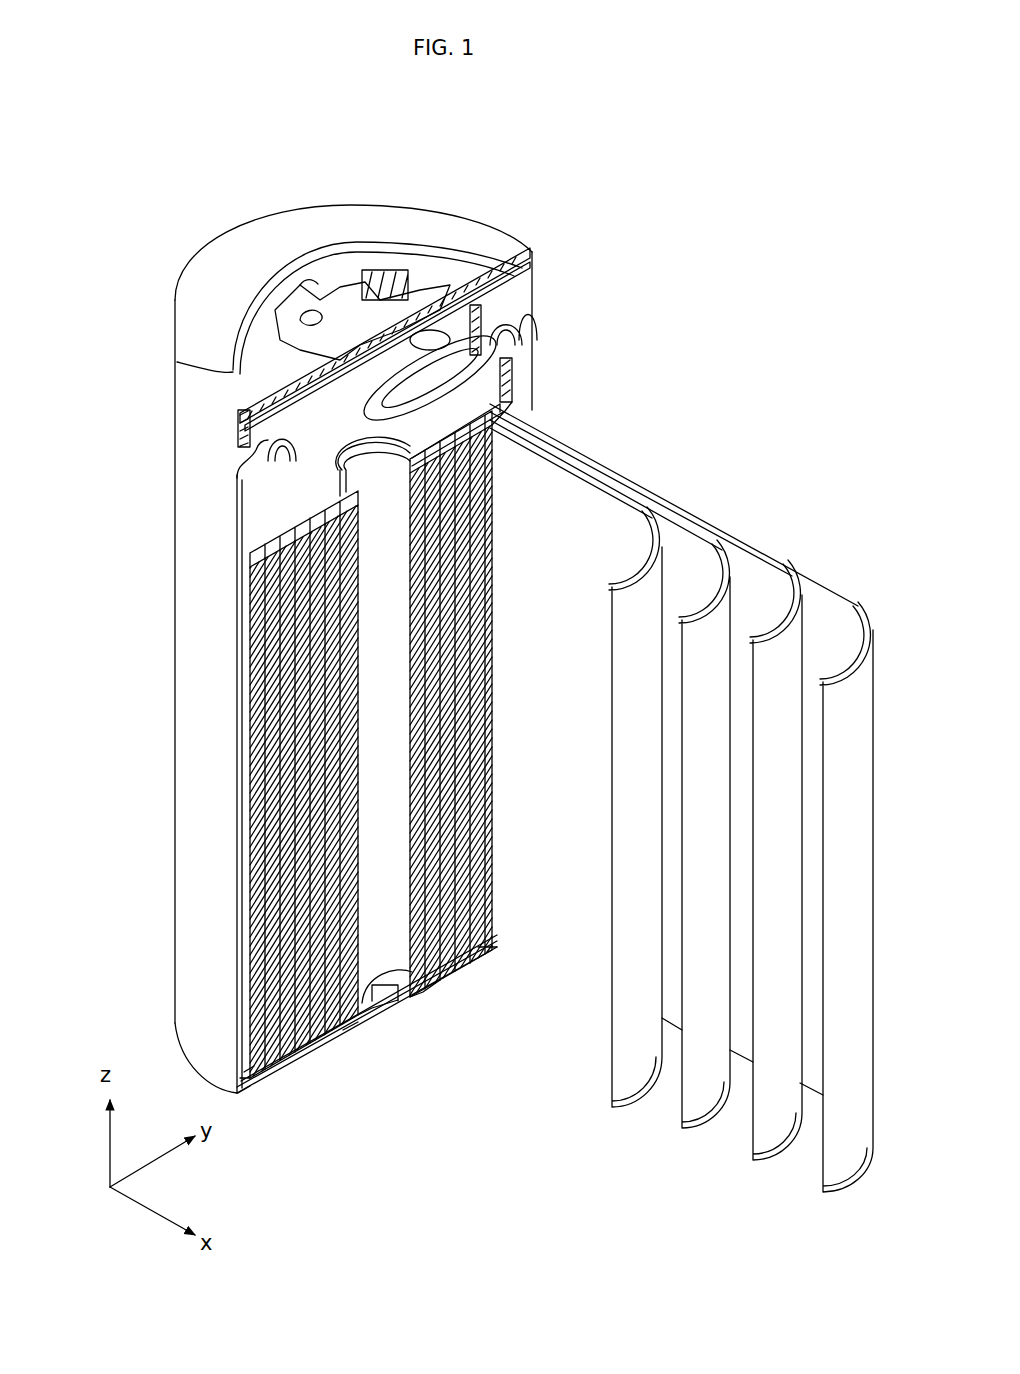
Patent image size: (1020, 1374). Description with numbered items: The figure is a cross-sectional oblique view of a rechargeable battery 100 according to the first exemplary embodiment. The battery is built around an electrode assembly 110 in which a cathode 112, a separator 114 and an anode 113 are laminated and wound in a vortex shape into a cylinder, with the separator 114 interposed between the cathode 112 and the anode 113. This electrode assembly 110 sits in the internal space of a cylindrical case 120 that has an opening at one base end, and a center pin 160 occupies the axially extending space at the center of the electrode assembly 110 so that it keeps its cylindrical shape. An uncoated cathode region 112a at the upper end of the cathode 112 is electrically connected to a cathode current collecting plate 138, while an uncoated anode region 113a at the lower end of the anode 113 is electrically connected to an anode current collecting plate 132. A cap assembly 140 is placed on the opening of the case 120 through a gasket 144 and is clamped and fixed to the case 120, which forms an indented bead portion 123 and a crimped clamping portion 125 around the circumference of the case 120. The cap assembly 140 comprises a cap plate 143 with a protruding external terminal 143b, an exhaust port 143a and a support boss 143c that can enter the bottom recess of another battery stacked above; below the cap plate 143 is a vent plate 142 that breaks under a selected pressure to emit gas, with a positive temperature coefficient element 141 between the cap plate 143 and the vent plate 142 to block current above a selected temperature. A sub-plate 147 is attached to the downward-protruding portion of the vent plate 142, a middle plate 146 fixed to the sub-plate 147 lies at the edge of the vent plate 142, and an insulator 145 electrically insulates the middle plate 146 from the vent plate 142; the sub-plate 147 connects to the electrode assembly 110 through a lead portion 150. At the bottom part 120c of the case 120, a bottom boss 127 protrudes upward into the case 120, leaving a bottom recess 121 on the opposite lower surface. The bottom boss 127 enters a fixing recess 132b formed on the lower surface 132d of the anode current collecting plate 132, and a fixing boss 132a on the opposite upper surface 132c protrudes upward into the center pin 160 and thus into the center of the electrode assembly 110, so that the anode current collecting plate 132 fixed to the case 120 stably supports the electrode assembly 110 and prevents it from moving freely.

The rechargeable battery 100 is at (410, 122).
The electrode assembly 110 is at (456, 963).
The cathode 112 is at (776, 1145).
The uncoated cathode region 112a is at (765, 560).
The anode 113 is at (613, 1074).
The uncoated anode region 113a is at (621, 1101).
The separator 114 is at (703, 1114).
The case 120 is at (196, 659).
The bottom part 120c is at (484, 951).
The bottom recess 121 is at (370, 1018).
The bead portion 123 is at (268, 458).
The clamping portion 125 is at (250, 432).
The bottom boss 127 is at (343, 1036).
The anode current collecting plate 132 is at (259, 1083).
The fixing boss 132a is at (423, 1000).
The fixing recess 132b is at (383, 992).
The upper surface 132c is at (250, 1076).
The lower surface 132d is at (244, 1093).
The cathode current collecting plate 138 is at (257, 505).
The cap assembly 140 is at (628, 196).
The positive temperature coefficient element 141 is at (531, 258).
The vent plate 142 is at (531, 276).
The cap plate 143 is at (447, 268).
The exhaust port 143a is at (316, 333).
The external terminal 143b is at (326, 292).
The support boss 143c is at (382, 282).
The gasket 144 is at (528, 300).
The insulator 145 is at (490, 318).
The middle plate 146 is at (483, 338).
The sub-plate 147 is at (488, 366).
The lead portion 150 is at (513, 378).
The center pin 160 is at (378, 773).